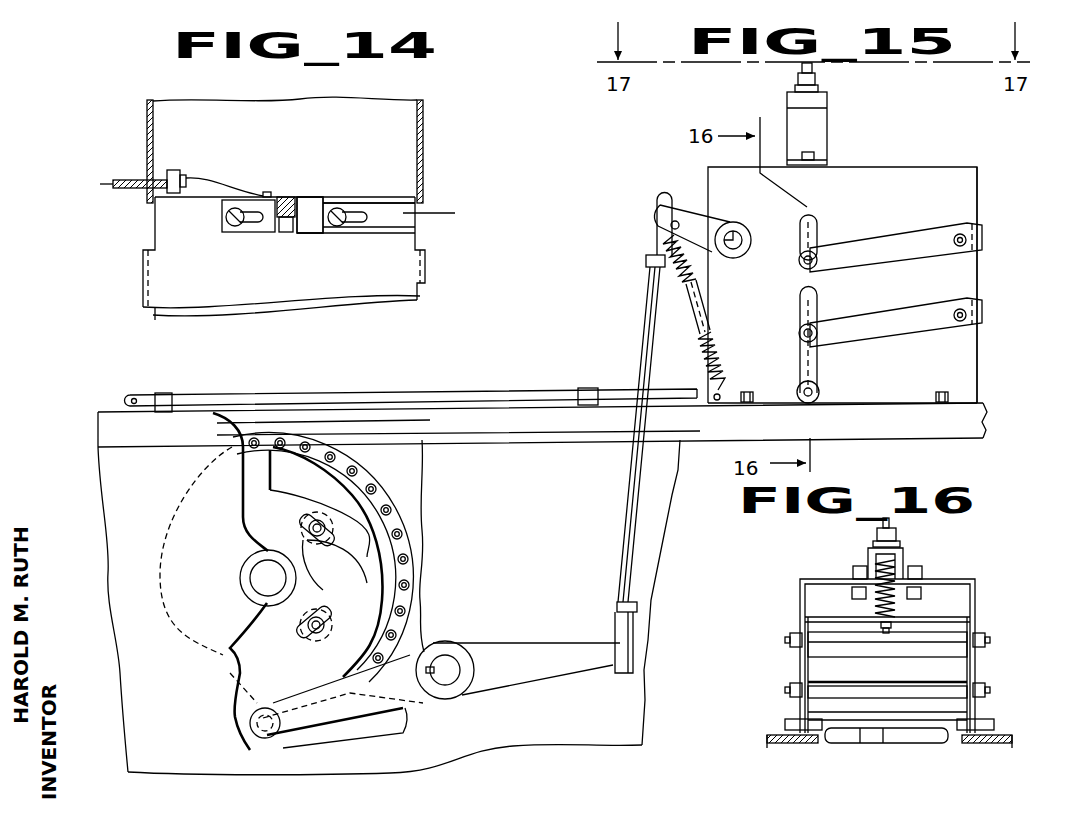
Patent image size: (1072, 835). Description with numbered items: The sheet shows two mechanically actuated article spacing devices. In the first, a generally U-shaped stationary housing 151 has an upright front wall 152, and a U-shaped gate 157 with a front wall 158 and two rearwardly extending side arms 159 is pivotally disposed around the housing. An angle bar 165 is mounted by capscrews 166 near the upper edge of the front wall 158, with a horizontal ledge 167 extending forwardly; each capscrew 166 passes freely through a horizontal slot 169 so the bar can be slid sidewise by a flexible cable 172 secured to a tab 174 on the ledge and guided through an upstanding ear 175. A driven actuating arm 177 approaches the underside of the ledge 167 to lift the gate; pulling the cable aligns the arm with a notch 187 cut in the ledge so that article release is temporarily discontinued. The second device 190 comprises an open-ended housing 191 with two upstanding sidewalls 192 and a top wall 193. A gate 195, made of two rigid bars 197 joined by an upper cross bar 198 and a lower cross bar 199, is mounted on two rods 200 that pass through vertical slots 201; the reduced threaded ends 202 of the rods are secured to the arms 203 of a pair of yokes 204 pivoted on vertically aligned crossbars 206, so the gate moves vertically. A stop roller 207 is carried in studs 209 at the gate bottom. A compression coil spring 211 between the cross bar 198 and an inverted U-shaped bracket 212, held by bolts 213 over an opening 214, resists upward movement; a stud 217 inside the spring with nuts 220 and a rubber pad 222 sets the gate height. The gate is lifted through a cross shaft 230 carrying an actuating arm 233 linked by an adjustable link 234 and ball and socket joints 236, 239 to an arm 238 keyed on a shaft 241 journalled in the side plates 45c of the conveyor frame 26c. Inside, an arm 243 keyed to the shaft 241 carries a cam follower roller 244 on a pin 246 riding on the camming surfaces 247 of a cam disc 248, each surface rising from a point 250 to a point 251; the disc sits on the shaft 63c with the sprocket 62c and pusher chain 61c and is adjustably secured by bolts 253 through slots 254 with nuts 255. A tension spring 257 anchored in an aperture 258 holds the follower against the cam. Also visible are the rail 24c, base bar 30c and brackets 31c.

In FIG. 14, the stationary housing 151 is at (372, 124).
In FIG. 14, the front wall 152 is at (302, 161).
In FIG. 14, the gate 157 is at (143, 278).
In FIG. 14, the front wall 158 is at (228, 284).
In FIG. 14, the side arms 159 is at (147, 262).
In FIG. 14, the angle bar 165 is at (449, 213).
In FIG. 14, the capscrews 166 is at (225, 222).
In FIG. 14, the horizontal ledge 167 is at (398, 205).
In FIG. 14, the horizontal slot 169 is at (258, 226).
In FIG. 14, the flexible cable 172 is at (140, 179).
In FIG. 14, the tab 174 is at (270, 193).
In FIG. 14, the upstanding ear 175 is at (177, 173).
In FIG. 14, the actuating arm 177 is at (290, 233).
In FIG. 14, the notch 187 is at (317, 197).
In FIG. 15, the article spacing device 190 is at (952, 179).
In FIG. 16, the article spacing device 190 is at (1000, 568).
In FIG. 15, the housing 191 is at (888, 201).
In FIG. 16, the housing 191 is at (812, 582).
In FIG. 15, the sidewalls 192 is at (965, 193).
In FIG. 16, the sidewalls 192 is at (800, 598).
In FIG. 16, the top wall 193 is at (955, 578).
In FIG. 15, the gate 195 is at (808, 306).
In FIG. 16, the gate 195 is at (884, 743).
In FIG. 16, the rigid bars 197 is at (810, 662).
In FIG. 16, the cross bar 198 is at (968, 614).
In FIG. 16, the cross bar 199 is at (948, 708).
In FIG. 15, the rods 200 is at (799, 260).
In FIG. 16, the rods 200 is at (962, 650).
In FIG. 15, the slots 201 is at (818, 221).
In FIG. 16, the slots 201 is at (802, 616).
In FIG. 15, the threaded ends 202 is at (800, 254).
In FIG. 15, the arms 203 is at (927, 240).
In FIG. 15, the yokes 204 is at (986, 241).
In FIG. 15, the crossbars 206 is at (968, 236).
In FIG. 15, the stop roller 207 is at (821, 389).
In FIG. 16, the stop roller 207 is at (862, 744).
In FIG. 15, the studs 209 is at (817, 404).
In FIG. 16, the studs 209 is at (784, 723).
In FIG. 16, the compression coil spring 211 is at (873, 595).
In FIG. 15, the inverted U-shaped bracket 212 is at (820, 128).
In FIG. 16, the inverted U-shaped bracket 212 is at (868, 561).
In FIG. 16, the bolts 213 is at (853, 570).
In FIG. 16, the opening 214 is at (912, 591).
In FIG. 16, the stud 217 is at (889, 520).
In FIG. 16, the nuts 220 is at (879, 530).
In FIG. 16, the rubber pad 222 is at (898, 545).
In FIG. 15, the cross shaft 230 is at (737, 232).
In FIG. 15, the actuating arm 233 is at (700, 243).
In FIG. 15, the adjustable link 234 is at (634, 507).
In FIG. 15, the ball and socket joint 236 is at (658, 208).
In FIG. 15, the arm 238 is at (555, 670).
In FIG. 15, the ball and socket joint 239 is at (630, 653).
In FIG. 15, the shaft 241 is at (450, 666).
In FIG. 15, the arm 243 is at (367, 711).
In FIG. 15, the cam follower roller 244 is at (288, 737).
In FIG. 15, the pin 246 is at (263, 742).
In FIG. 15, the camming surfaces 247 is at (228, 452).
In FIG. 15, the cam disc 248 is at (331, 673).
In FIG. 15, the point 250 is at (274, 488).
In FIG. 15, the point 251 is at (262, 455).
In FIG. 15, the bolts 253 is at (324, 574).
In FIG. 15, the slot 254 is at (360, 604).
In FIG. 15, the nuts 255 is at (322, 524).
In FIG. 15, the tension spring 257 is at (694, 280).
In FIG. 15, the aperture 258 is at (718, 383).
In FIG. 15, the rail 24c is at (518, 417).
In FIG. 15, the conveyor frame 26c is at (133, 503).
In FIG. 15, the base bar 30c is at (116, 432).
In FIG. 15, the bracket 31c is at (118, 412).
In FIG. 16, the bracket 31c is at (800, 744).
In FIG. 15, the side plates 45c is at (133, 601).
In FIG. 15, the pusher chain 61c is at (407, 573).
In FIG. 15, the sprocket 62c is at (380, 550).
In FIG. 15, the shaft 63c is at (268, 578).